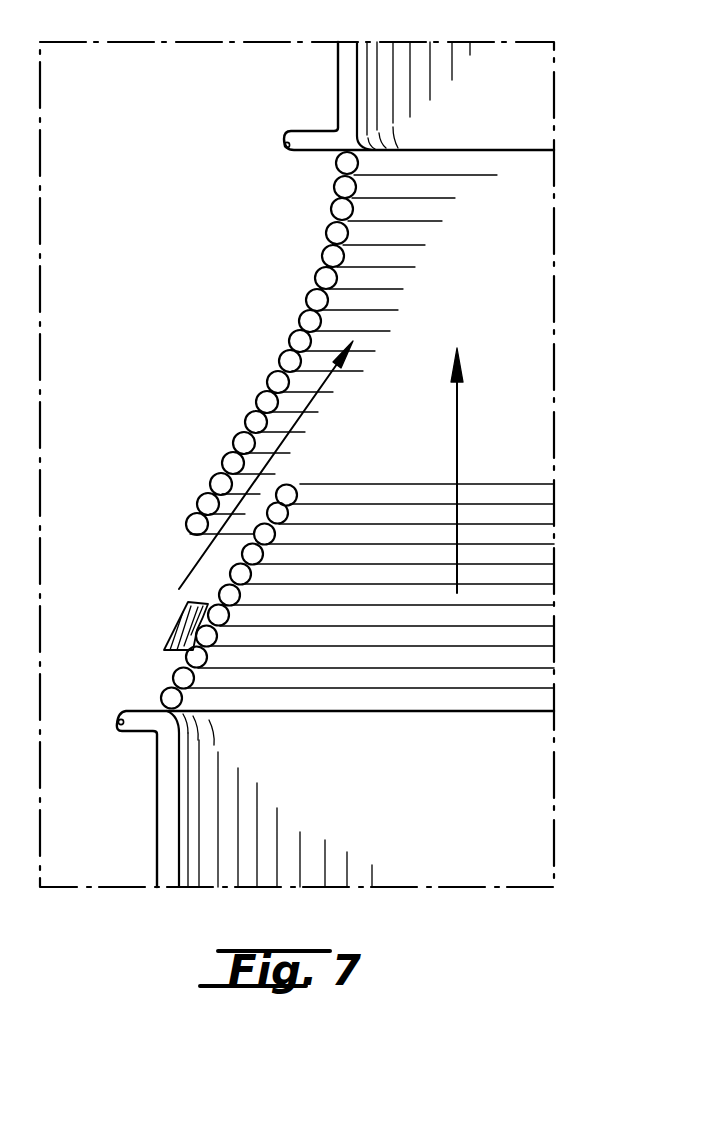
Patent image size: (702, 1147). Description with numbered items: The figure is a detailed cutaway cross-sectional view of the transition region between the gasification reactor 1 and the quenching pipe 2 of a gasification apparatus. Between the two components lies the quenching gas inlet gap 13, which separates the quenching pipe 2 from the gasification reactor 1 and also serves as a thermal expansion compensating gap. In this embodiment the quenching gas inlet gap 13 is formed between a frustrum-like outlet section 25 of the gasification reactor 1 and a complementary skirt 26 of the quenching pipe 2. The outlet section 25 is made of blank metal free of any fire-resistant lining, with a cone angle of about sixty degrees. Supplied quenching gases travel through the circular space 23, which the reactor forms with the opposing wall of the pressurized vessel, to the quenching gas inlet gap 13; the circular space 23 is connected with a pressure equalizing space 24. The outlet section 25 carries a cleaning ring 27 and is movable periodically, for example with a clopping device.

The gasification reactor 1 is at (517, 798).
The quenching pipe 2 is at (518, 113).
The quenching gas inlet gap 13 is at (230, 509).
The circular space 23 is at (115, 850).
The pressure equalizing space 24 is at (204, 297).
The frustrum-like outlet section 25 is at (197, 570).
The skirt 26 is at (220, 482).
The cleaning ring 27 is at (190, 628).